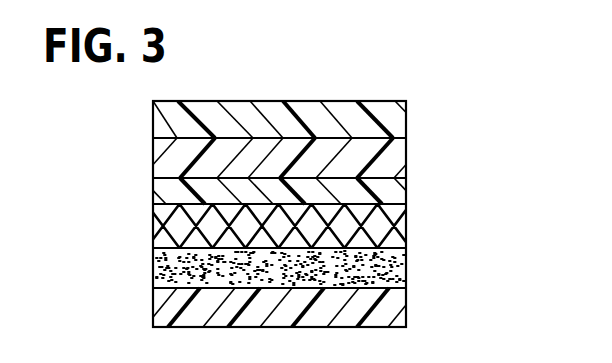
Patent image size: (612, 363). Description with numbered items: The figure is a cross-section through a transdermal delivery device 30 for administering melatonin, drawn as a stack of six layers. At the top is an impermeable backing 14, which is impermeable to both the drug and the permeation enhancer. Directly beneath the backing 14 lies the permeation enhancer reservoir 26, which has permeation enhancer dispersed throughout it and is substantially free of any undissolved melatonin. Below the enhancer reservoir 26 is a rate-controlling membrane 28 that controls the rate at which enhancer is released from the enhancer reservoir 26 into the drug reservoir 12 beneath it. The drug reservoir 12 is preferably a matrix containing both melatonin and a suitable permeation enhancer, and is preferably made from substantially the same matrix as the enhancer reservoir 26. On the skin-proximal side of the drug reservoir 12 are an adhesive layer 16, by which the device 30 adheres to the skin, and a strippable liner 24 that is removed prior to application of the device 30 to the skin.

The transdermal delivery device 30 is at (333, 88).
The impermeable backing 14 is at (388, 117).
The permeation enhancer reservoir 26 is at (386, 162).
The rate-controlling membrane 28 is at (386, 195).
The drug reservoir 12 is at (386, 233).
The adhesive layer 16 is at (400, 275).
The strippable liner 24 is at (400, 316).